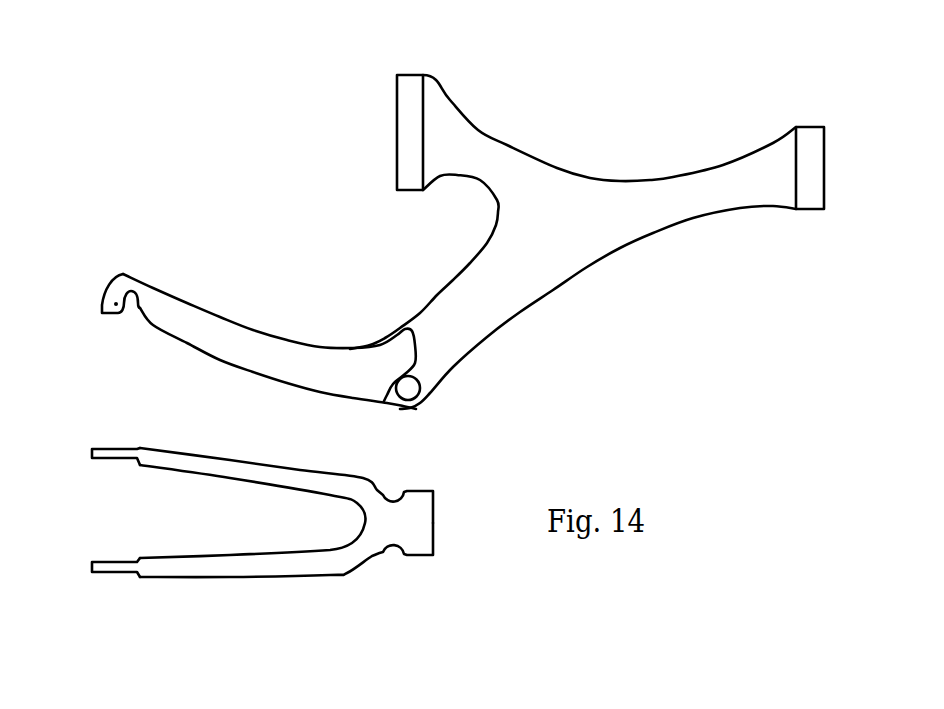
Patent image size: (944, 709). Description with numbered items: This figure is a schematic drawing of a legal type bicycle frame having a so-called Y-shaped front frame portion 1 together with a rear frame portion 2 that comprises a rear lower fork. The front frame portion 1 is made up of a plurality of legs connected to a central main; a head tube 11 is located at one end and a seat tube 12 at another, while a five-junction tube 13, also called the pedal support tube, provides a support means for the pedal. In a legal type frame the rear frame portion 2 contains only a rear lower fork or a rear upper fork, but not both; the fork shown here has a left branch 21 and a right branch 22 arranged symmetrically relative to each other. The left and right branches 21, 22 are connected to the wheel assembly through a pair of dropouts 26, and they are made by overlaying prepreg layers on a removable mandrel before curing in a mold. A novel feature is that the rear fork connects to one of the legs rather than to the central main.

The front frame portion 1 is at (605, 157).
The head tube 11 is at (811, 127).
The seat tube 12 is at (413, 82).
The rear frame portion 2 is at (208, 318).
The five-junction tube 13 is at (405, 387).
The left branch 21 is at (244, 466).
The right branch 22 is at (251, 578).
The dropouts 26 is at (113, 293).